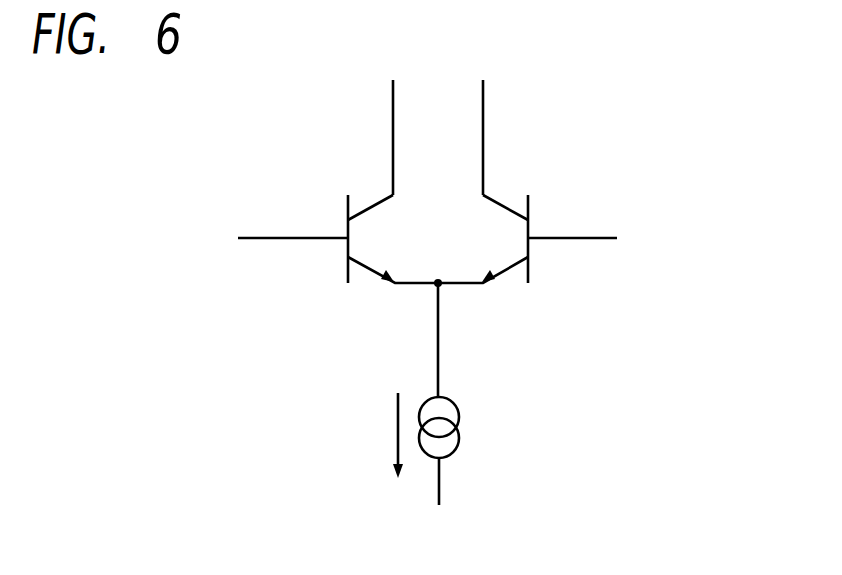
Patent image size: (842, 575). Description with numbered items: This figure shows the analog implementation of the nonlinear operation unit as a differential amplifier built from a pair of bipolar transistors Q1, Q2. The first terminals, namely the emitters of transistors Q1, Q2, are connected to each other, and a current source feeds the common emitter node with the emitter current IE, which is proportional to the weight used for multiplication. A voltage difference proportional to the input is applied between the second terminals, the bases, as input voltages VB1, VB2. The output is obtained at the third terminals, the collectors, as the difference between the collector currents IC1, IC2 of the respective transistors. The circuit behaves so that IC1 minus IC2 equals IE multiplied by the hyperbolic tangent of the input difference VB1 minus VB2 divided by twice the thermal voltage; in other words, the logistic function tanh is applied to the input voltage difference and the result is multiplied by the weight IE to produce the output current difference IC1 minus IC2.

The bipolar transistor Q1 is at (393, 239).
The bipolar transistor Q2 is at (483, 239).
The collector current IC1 is at (369, 99).
The collector current IC2 is at (499, 99).
The input voltage VB1 is at (252, 235).
The input voltage VB2 is at (611, 236).
The emitter current IE is at (375, 394).